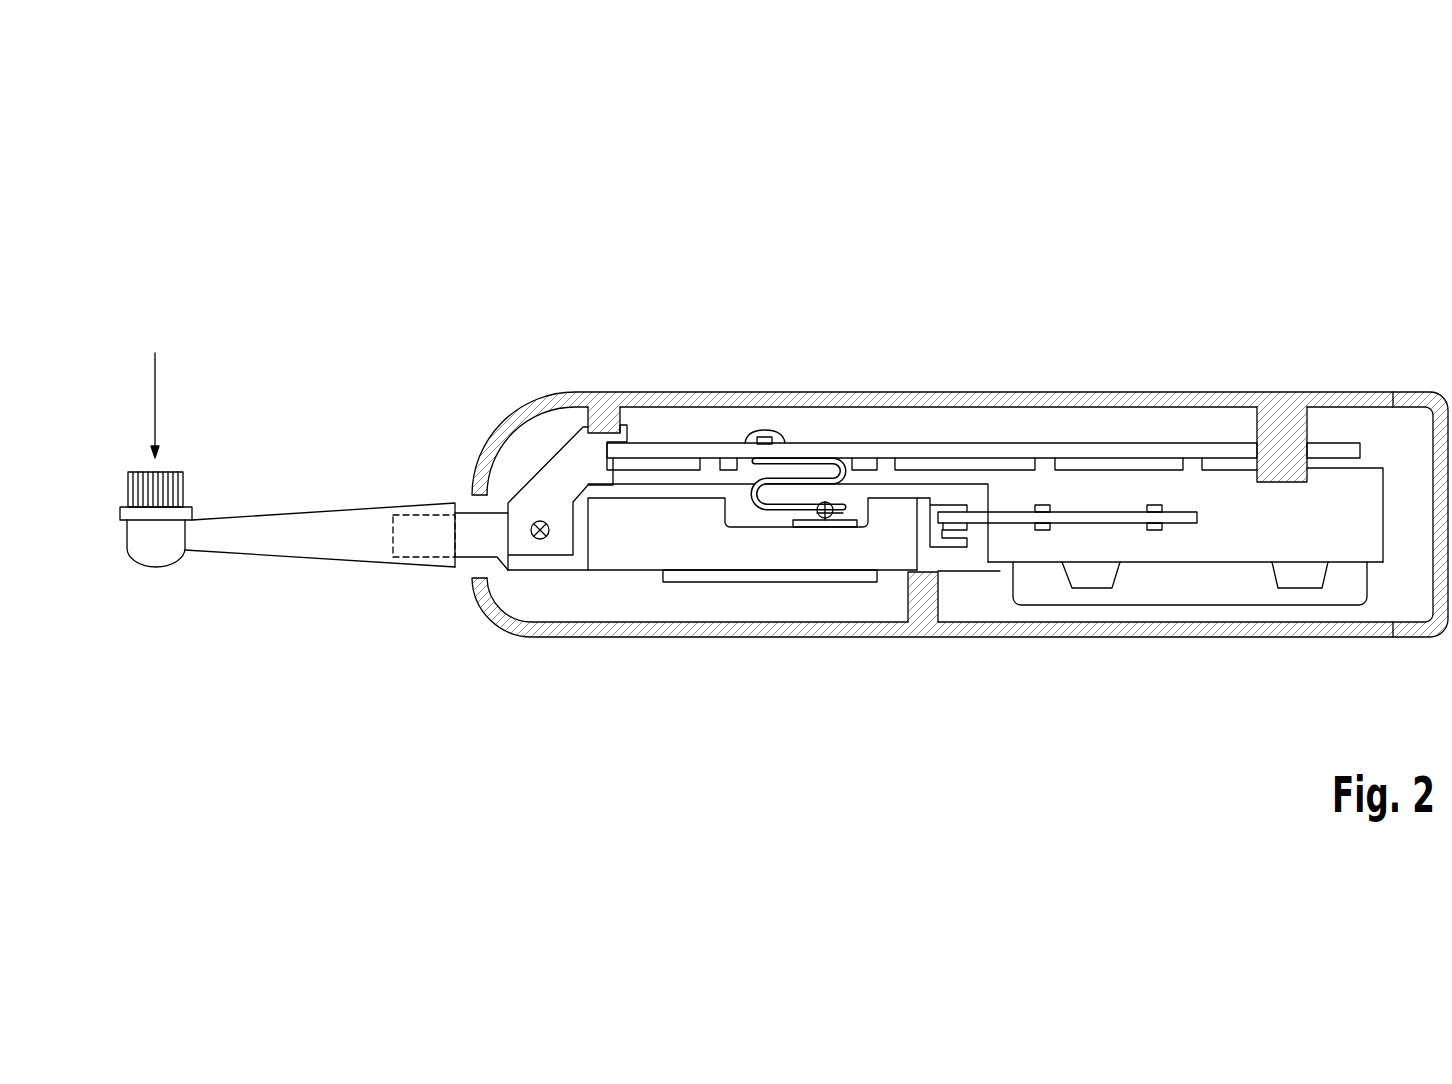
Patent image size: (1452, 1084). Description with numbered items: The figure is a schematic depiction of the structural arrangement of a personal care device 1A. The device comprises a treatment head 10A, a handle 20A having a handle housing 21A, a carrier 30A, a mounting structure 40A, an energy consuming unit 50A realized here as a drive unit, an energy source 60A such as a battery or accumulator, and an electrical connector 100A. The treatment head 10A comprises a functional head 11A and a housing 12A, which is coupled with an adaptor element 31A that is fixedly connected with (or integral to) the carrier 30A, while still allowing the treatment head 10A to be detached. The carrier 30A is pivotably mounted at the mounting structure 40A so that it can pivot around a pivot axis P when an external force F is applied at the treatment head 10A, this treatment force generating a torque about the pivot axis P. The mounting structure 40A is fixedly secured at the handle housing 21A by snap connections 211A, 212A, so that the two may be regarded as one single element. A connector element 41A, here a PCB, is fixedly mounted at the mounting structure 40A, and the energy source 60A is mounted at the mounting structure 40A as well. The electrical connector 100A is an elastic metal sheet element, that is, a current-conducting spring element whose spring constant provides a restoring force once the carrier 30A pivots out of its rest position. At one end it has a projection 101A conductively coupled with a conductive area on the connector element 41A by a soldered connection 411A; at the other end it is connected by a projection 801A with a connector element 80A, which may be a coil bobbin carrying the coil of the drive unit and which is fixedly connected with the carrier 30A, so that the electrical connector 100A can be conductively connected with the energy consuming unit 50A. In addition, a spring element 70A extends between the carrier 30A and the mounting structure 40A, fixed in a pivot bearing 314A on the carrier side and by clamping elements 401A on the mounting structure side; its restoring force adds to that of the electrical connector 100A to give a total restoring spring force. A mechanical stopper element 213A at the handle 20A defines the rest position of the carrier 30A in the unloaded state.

The personal care device 1A is at (444, 360).
The external force F is at (164, 404).
The treatment head 10A is at (285, 492).
The functional head 11A is at (147, 550).
The housing 12A is at (285, 545).
The adaptor element 31A is at (463, 522).
The pivot axis P is at (540, 540).
The handle 20A is at (928, 385).
The handle housing 21A is at (1230, 402).
The snap connection 211A is at (603, 428).
The snap connection 212A is at (1282, 442).
The mechanical stopper element 213A is at (923, 608).
The mounting structure 40A is at (550, 478).
The connector element 41A is at (1025, 452).
The carrier 30A is at (568, 575).
The energy consuming unit 50A is at (840, 578).
The soldered connection 411A is at (745, 425).
The projection 101A is at (762, 433).
The electrical connector 100A is at (789, 475).
The connector element 80A is at (830, 527).
The projection 801A is at (815, 527).
The pivot bearing 314A is at (965, 500).
The spring element 70A is at (1027, 520).
The clamping elements 401A is at (1155, 505).
The energy source 60A is at (1163, 590).